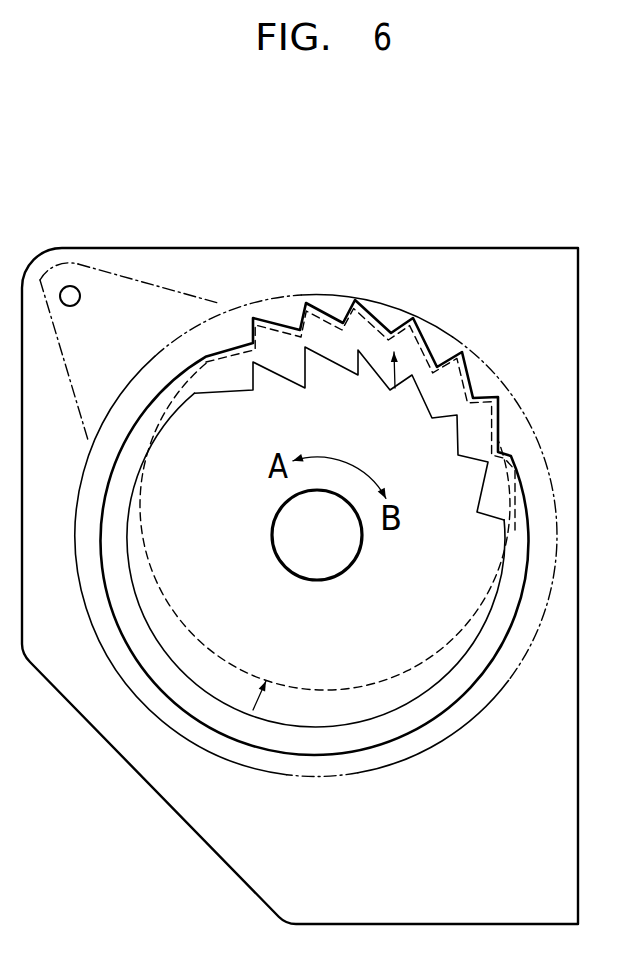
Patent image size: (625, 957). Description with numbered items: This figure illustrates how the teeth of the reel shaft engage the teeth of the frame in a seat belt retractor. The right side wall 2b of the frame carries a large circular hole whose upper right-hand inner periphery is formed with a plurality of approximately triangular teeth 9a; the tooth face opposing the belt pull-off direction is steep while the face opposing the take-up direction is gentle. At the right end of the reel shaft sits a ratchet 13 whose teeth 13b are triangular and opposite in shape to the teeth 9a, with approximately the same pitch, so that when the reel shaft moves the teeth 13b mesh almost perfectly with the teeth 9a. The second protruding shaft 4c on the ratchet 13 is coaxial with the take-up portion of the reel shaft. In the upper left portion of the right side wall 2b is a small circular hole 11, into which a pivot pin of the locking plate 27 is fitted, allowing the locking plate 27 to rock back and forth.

The right side wall 2b is at (458, 257).
The circular hole 11 is at (68, 289).
The locking plate 27 is at (443, 745).
The teeth 9a is at (377, 315).
The ratchet 13 is at (220, 703).
The teeth 13b is at (358, 360).
The second protruding shaft 4c is at (316, 565).